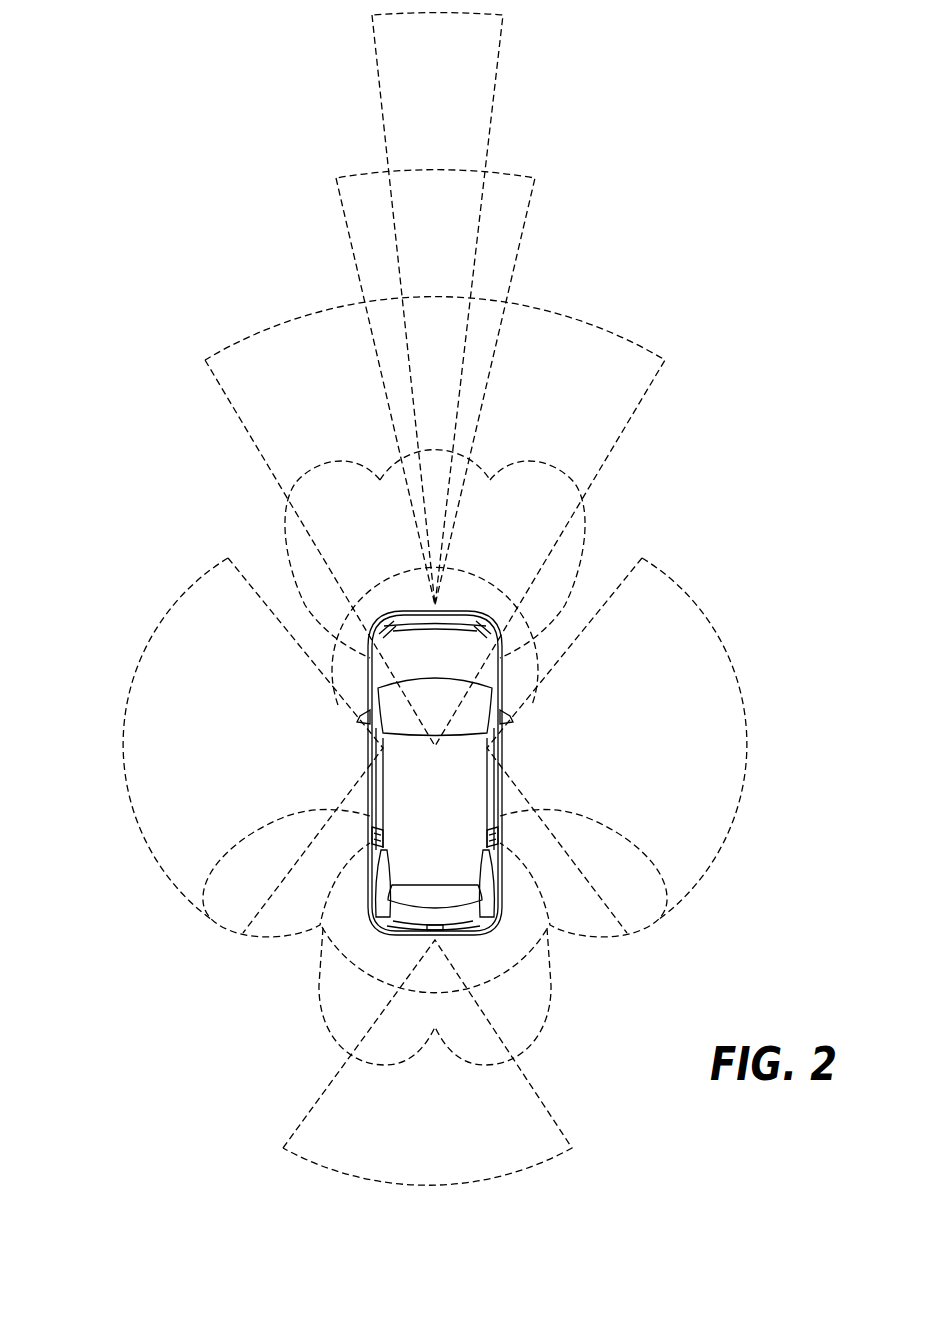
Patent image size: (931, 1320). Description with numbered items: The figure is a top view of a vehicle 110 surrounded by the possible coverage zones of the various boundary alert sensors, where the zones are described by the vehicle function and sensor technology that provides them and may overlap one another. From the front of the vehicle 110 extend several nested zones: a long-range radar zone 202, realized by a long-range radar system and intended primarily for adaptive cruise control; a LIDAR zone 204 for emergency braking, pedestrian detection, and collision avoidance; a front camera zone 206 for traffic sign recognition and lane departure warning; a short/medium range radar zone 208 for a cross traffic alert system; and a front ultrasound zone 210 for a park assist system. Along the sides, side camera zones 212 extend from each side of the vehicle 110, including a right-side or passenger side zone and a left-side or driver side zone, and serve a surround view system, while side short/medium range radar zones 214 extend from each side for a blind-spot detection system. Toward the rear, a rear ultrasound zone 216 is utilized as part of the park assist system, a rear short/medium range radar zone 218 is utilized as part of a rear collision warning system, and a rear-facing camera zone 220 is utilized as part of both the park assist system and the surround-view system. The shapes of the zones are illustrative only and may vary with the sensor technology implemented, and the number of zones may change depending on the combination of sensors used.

The vehicle 110 is at (452, 827).
The long-range radar zone 202 is at (500, 60).
The LIDAR zone 204 is at (525, 230).
The front camera zone 206 is at (662, 368).
The short/medium range radar zone 208 is at (588, 540).
The front ultrasound zone 210 is at (540, 660).
The side camera zones 212 is at (122, 748).
The side short/medium range radar zones 214 is at (216, 928).
The rear ultrasound zone 216 is at (545, 928).
The rear short/medium range radar zone 218 is at (550, 1005).
The rear-facing camera zone 220 is at (478, 1182).